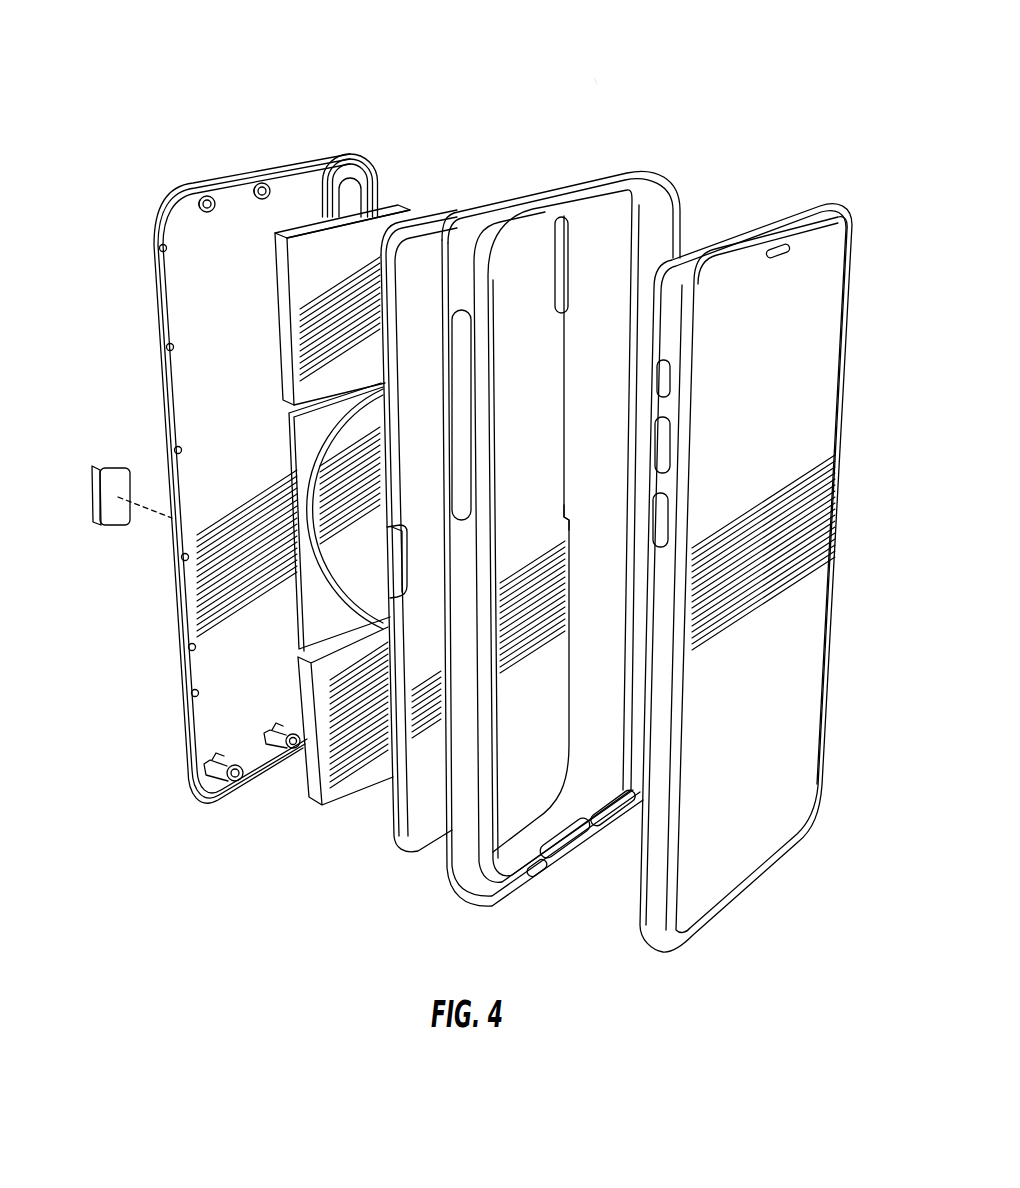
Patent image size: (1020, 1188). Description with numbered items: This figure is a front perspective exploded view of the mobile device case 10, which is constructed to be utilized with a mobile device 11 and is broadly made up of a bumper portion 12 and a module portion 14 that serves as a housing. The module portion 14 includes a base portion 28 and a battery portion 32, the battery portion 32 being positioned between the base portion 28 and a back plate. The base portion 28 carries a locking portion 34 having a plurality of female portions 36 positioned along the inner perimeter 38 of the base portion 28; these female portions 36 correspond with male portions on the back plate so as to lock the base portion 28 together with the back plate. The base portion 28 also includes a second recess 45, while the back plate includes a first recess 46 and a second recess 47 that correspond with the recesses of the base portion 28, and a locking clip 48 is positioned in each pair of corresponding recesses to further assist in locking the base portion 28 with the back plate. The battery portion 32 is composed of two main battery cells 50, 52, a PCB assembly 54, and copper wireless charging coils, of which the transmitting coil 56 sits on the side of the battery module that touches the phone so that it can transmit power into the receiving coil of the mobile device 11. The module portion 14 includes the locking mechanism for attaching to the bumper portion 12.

The mobile device case 10 is at (597, 82).
The mobile device 11 is at (825, 287).
The bumper portion 12 is at (638, 184).
The module portion 14 is at (481, 185).
The base portion 28 is at (159, 206).
The battery portion 32 is at (313, 582).
The locking portion 34 is at (243, 178).
The female portions 36 is at (160, 250).
The inner perimeter 38 is at (166, 407).
The second recess 45 is at (178, 502).
The first recess 46 is at (572, 502).
The second recess 47 is at (403, 583).
The locking clip 48 is at (110, 492).
The battery cell 50 is at (385, 216).
The battery cell 52 is at (300, 792).
The PCB assembly 54 is at (186, 650).
The transmitting coil 56 is at (333, 468).